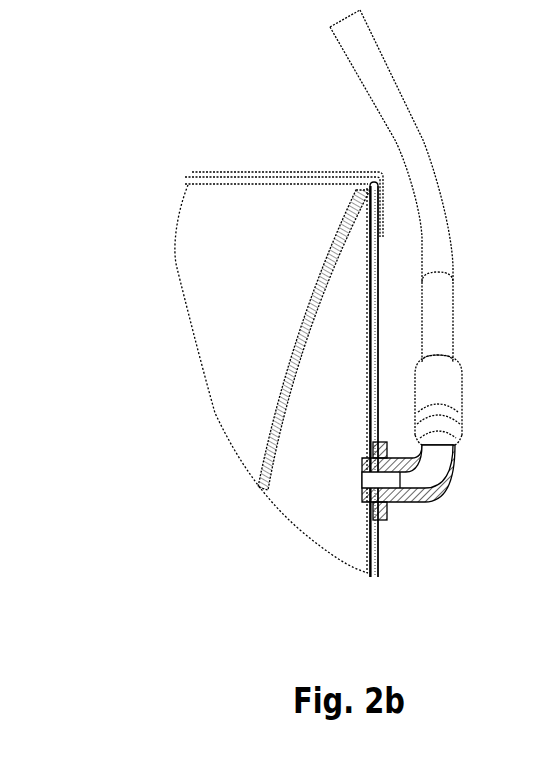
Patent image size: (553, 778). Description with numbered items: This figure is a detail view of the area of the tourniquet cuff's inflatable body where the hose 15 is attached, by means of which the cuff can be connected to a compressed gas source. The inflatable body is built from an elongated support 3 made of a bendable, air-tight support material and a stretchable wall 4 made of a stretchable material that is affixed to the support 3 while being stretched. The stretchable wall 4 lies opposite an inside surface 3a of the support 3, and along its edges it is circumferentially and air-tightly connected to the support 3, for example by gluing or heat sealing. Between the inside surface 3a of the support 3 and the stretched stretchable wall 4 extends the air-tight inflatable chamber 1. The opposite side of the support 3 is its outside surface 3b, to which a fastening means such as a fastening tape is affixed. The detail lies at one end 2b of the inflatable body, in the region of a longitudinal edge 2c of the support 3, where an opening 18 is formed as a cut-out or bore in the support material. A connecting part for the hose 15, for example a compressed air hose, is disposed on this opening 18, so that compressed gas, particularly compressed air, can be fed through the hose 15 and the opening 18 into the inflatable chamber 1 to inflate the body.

The inflatable chamber 1 is at (325, 527).
The end of the inflatable body 2b is at (366, 330).
The longitudinal edge 2c is at (216, 173).
The elongated support 3 is at (381, 359).
The inside surface of the support 3a is at (370, 530).
The outside surface of the support 3b is at (378, 562).
The stretchable wall 4 is at (305, 320).
The hose 15 is at (440, 297).
The opening 18 is at (366, 482).